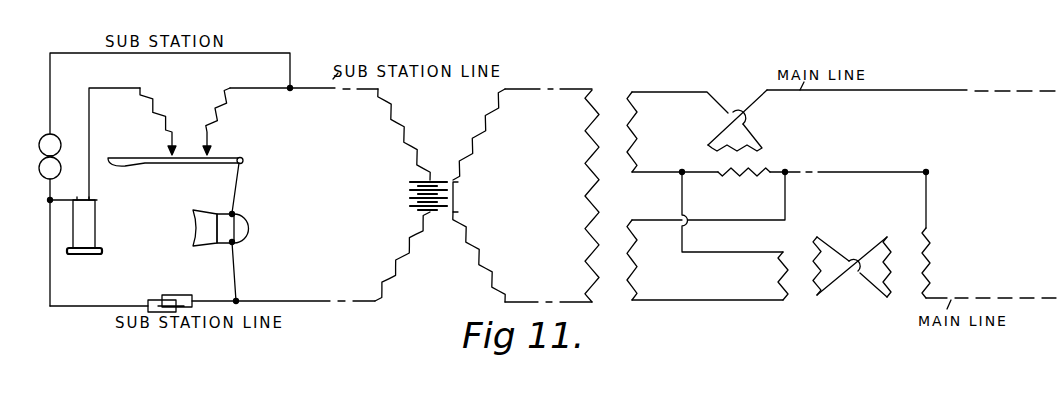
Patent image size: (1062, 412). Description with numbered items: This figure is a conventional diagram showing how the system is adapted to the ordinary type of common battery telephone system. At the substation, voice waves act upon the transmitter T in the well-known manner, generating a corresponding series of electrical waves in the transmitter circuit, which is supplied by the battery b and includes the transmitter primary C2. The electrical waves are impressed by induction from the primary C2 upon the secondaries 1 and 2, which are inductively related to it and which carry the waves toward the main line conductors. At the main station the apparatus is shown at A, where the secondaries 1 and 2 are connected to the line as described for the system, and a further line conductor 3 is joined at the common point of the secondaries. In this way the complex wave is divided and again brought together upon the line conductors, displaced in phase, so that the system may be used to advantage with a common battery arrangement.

The station A apparatus A is at (699, 109).
The secondary coil 1 is at (841, 187).
The secondary coil 2 is at (778, 134).
The line conductor 3 is at (852, 277).
The battery b is at (416, 195).
The transmitter primary C2 is at (569, 193).
The transmitter T is at (221, 220).